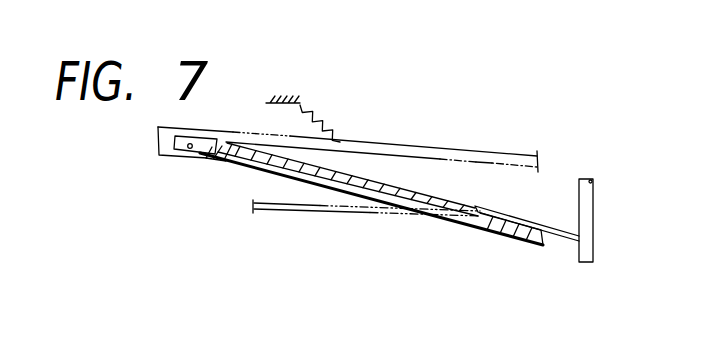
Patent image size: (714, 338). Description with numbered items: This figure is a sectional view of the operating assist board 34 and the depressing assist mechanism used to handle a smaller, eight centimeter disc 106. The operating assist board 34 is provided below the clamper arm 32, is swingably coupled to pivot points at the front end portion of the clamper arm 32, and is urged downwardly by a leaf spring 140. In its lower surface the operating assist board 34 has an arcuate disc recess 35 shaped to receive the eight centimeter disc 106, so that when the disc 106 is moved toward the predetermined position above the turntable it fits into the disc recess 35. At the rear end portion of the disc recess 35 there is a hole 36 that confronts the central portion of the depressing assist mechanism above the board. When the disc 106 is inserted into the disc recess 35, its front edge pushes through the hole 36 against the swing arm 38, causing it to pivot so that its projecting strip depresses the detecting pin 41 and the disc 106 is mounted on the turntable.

The clamper arm 32 is at (460, 150).
The leaf spring 140 is at (363, 197).
The arcuate disc recess 35 is at (380, 183).
The hole 36 is at (472, 227).
The operating assist board 34 is at (537, 247).
The swing arm 38 is at (548, 225).
The detecting pin 41 is at (597, 193).
The disc 106 is at (295, 212).